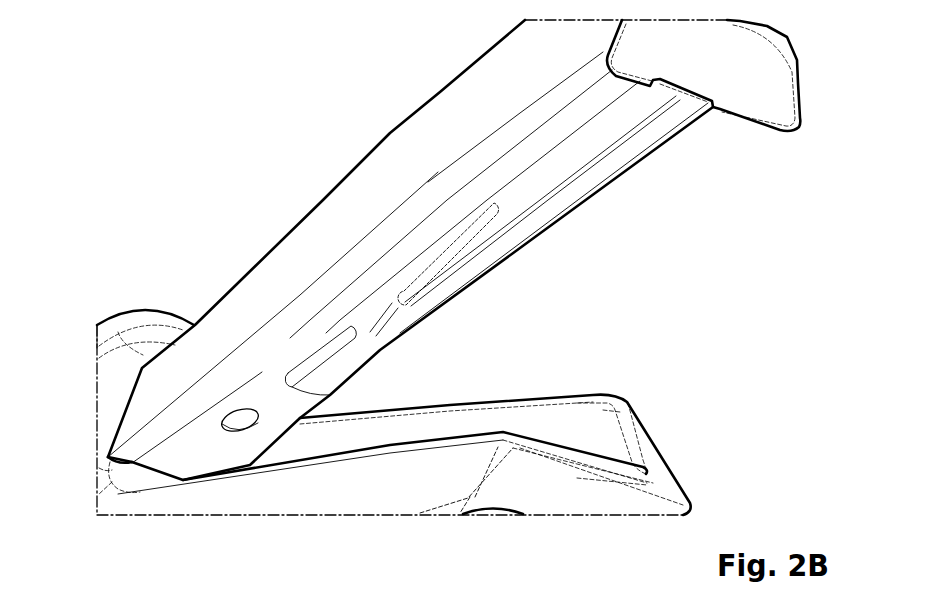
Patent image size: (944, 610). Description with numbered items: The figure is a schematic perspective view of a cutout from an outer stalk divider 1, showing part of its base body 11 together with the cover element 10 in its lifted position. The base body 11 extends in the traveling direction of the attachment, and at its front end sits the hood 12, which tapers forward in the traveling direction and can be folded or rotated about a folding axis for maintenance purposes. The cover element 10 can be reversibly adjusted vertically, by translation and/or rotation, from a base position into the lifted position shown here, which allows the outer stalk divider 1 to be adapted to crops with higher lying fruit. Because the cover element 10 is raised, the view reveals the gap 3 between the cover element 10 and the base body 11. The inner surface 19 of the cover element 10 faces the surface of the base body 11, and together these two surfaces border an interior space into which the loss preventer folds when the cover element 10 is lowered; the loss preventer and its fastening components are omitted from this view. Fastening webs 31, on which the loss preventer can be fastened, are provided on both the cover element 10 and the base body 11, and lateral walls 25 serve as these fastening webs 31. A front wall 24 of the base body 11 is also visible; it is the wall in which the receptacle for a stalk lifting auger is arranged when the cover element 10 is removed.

The outer stalk divider 1 is at (245, 97).
The cover element 10 is at (400, 158).
The gap 3 is at (491, 350).
The base body 11 is at (272, 503).
The hood 12 is at (117, 327).
The inner surface 19 is at (571, 134).
The front wall 24 is at (173, 328).
The lateral walls 25 is at (565, 417).
The fastening webs 31 is at (492, 219).